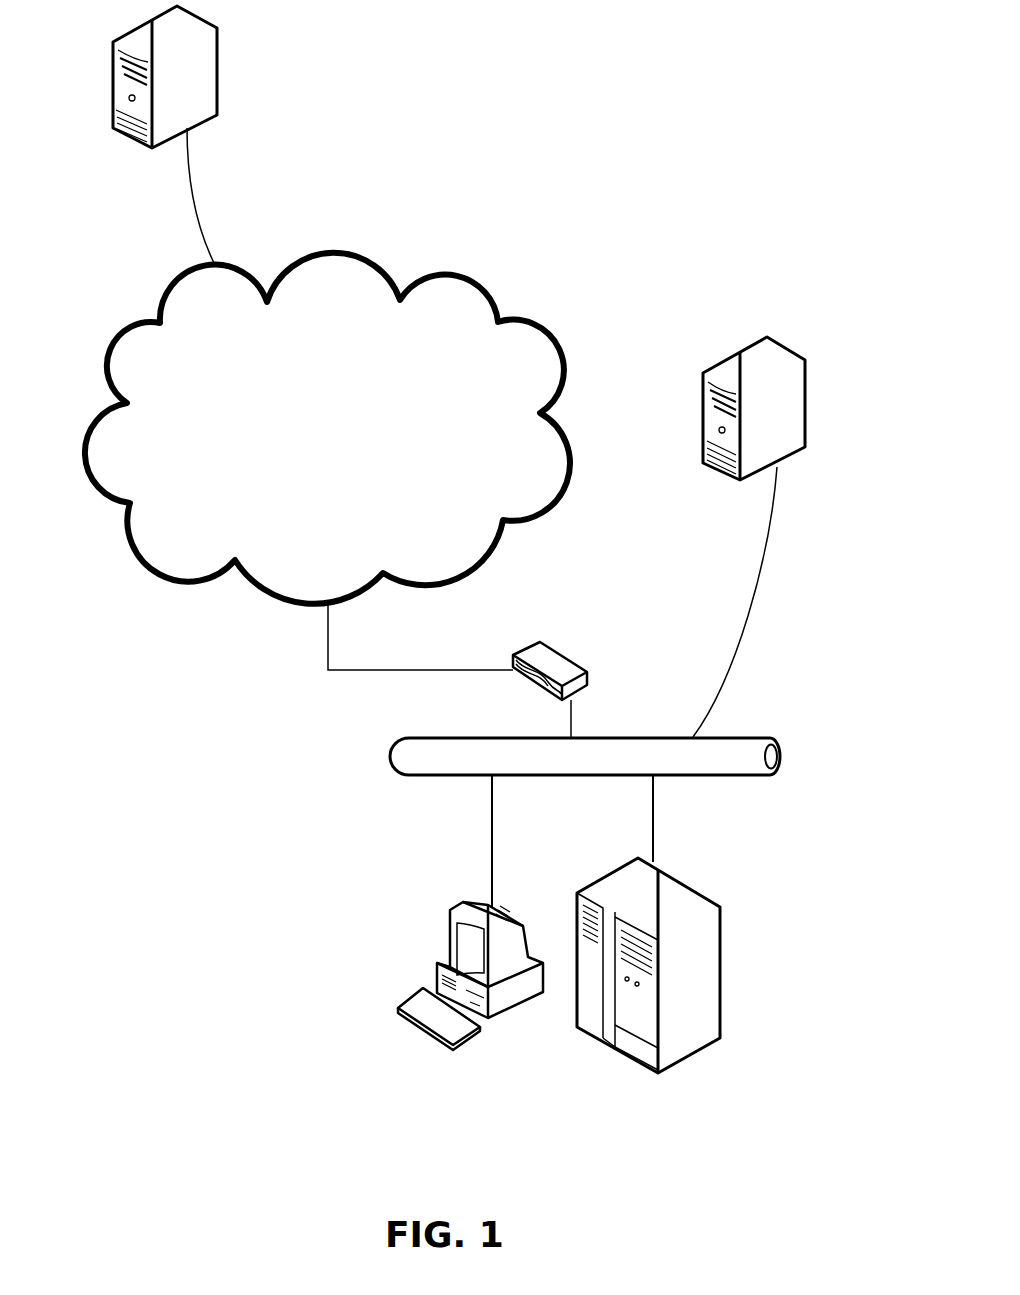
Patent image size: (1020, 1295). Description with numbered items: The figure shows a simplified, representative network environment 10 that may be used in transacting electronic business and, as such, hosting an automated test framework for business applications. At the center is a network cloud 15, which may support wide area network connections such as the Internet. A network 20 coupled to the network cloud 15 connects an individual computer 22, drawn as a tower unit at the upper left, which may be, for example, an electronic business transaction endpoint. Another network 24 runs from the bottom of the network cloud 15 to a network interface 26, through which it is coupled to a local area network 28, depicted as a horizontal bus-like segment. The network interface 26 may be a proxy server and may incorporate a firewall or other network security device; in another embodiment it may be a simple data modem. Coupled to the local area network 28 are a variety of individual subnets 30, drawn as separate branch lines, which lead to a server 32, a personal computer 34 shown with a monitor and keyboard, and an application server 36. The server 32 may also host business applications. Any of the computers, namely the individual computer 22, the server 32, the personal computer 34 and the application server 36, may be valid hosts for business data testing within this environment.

The network environment 10 is at (463, 203).
The network cloud 15 is at (570, 372).
The network 20 is at (207, 240).
The individual computer 22 is at (217, 77).
The network 24 is at (387, 670).
The network interface 26 is at (587, 673).
The local area network 28 is at (770, 735).
The individual subnets 30 is at (752, 578).
The server 32 is at (675, 1065).
The personal computer 34 is at (435, 972).
The application server 36 is at (807, 408).